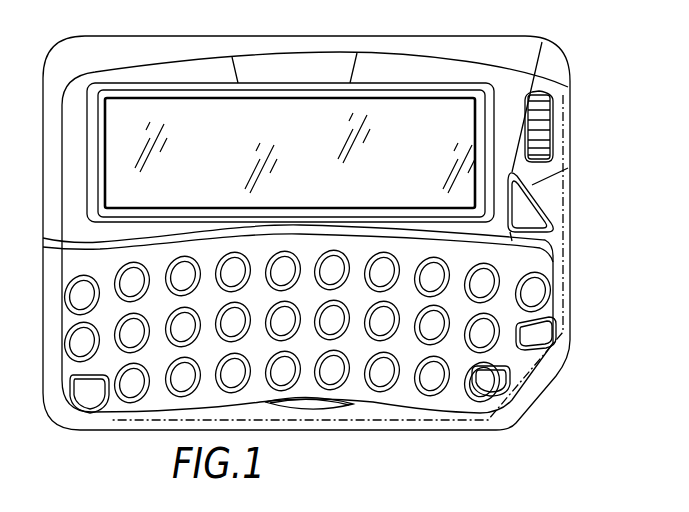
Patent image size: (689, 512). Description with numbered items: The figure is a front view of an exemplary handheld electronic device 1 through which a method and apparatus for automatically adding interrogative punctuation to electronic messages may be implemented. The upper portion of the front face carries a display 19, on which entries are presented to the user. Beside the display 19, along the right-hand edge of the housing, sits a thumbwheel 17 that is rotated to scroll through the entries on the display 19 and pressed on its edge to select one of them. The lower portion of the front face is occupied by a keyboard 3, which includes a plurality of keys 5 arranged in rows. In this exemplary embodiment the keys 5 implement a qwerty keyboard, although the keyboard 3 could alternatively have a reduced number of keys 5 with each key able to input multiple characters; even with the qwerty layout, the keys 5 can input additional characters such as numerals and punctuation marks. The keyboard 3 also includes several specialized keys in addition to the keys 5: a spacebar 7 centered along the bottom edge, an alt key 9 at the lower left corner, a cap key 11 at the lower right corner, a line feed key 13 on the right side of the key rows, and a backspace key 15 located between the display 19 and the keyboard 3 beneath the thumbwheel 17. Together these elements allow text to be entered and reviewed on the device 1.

The handheld electronic device 1 is at (457, 14).
The keyboard 3 is at (526, 264).
The keys 5 is at (536, 290).
The spacebar 7 is at (310, 407).
The alt key 9 is at (85, 388).
The cap key 11 is at (497, 378).
The line feed key 13 is at (535, 338).
The backspace key 15 is at (533, 212).
The thumbwheel 17 is at (547, 127).
The display 19 is at (332, 118).